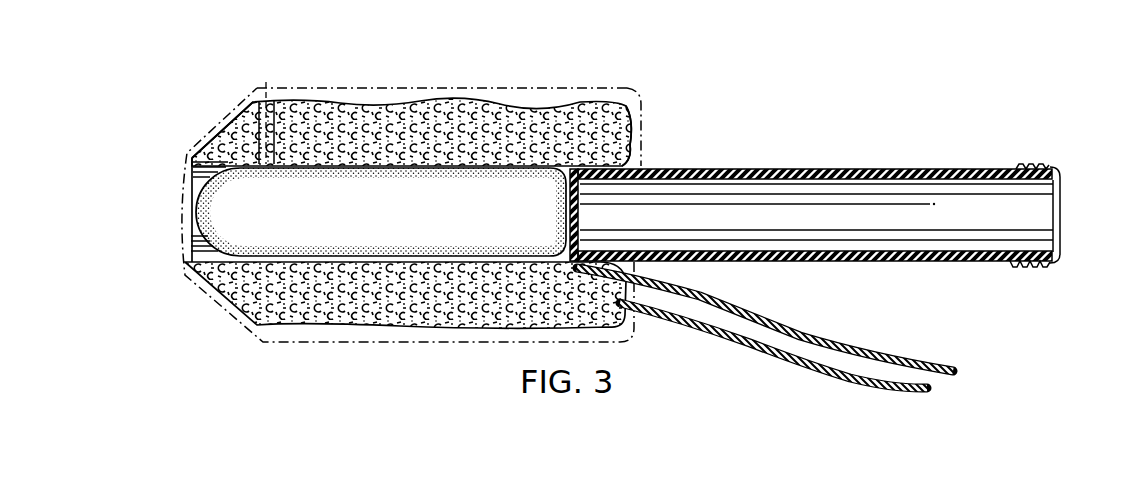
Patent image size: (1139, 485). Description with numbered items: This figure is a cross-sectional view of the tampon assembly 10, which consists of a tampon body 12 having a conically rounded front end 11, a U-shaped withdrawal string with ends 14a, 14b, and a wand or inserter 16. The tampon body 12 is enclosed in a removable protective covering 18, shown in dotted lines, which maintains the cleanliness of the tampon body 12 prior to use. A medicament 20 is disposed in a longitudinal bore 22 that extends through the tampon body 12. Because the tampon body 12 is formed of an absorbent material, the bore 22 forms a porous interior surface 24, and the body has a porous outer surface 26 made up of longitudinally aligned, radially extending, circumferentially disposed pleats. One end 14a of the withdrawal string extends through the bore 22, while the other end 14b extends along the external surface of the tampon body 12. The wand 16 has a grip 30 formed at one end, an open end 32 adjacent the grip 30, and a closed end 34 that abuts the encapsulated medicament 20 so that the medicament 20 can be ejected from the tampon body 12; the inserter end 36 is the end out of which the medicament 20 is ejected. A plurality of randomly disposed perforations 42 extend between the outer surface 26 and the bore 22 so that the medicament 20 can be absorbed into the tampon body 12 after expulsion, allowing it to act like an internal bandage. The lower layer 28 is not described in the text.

The tampon assembly 10 is at (557, 73).
The conically rounded front end 11 is at (227, 127).
The tampon body 12 is at (449, 100).
The withdrawal string end 14a is at (757, 320).
The withdrawal string end 14b is at (733, 337).
The wand or inserter 16 is at (748, 170).
The removable protective covering 18 is at (337, 87).
The medicament 20 is at (195, 231).
The longitudinal bore 22 is at (190, 211).
The porous interior surface 24 is at (194, 182).
The porous outer surface 26 is at (632, 92).
The outer cover bottom portion 28 is at (322, 327).
The grip 30 is at (1022, 171).
The open end 32 is at (1050, 212).
The closed end 34 is at (583, 206).
The open end 36 is at (634, 133).
The perforations 42 is at (265, 81).